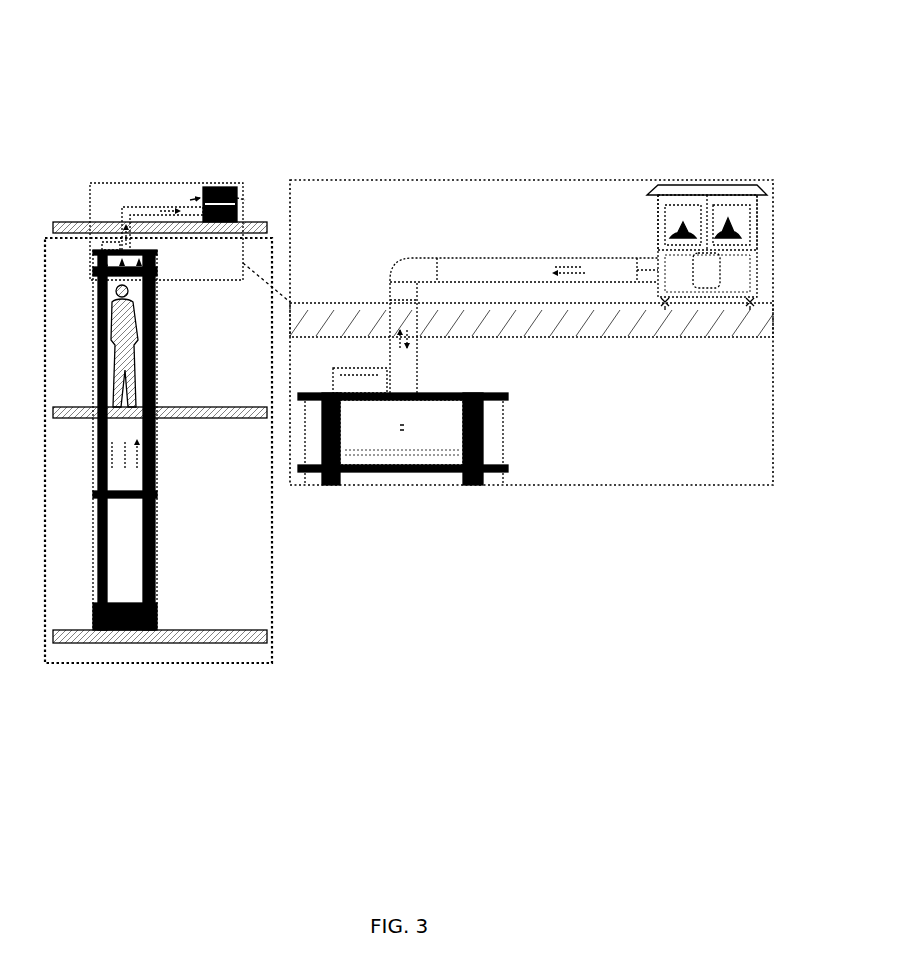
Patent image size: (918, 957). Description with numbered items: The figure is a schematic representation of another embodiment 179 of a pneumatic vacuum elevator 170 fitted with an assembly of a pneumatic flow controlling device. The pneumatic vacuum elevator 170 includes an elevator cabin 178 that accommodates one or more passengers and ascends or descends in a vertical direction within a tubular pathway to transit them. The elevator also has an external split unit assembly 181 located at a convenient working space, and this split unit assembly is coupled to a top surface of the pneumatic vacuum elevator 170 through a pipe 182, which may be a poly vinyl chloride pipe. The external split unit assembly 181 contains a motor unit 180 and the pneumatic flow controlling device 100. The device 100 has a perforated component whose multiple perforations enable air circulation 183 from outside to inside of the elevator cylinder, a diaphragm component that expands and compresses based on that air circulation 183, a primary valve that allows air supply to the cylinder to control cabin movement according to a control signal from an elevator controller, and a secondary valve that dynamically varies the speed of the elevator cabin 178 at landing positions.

The embodiment of a pneumatic vacuum elevator with an assembly of a pneumatic flow c 179 is at (345, 70).
The pneumatic vacuum elevator 170 is at (275, 657).
The elevator cabin 178 is at (113, 285).
The external split unit assembly 181 is at (218, 188).
The pipe 182 is at (452, 267).
The air circulation 183 is at (556, 266).
The motor unit 180 is at (747, 240).
The pneumatic flow controlling device 100 is at (713, 277).